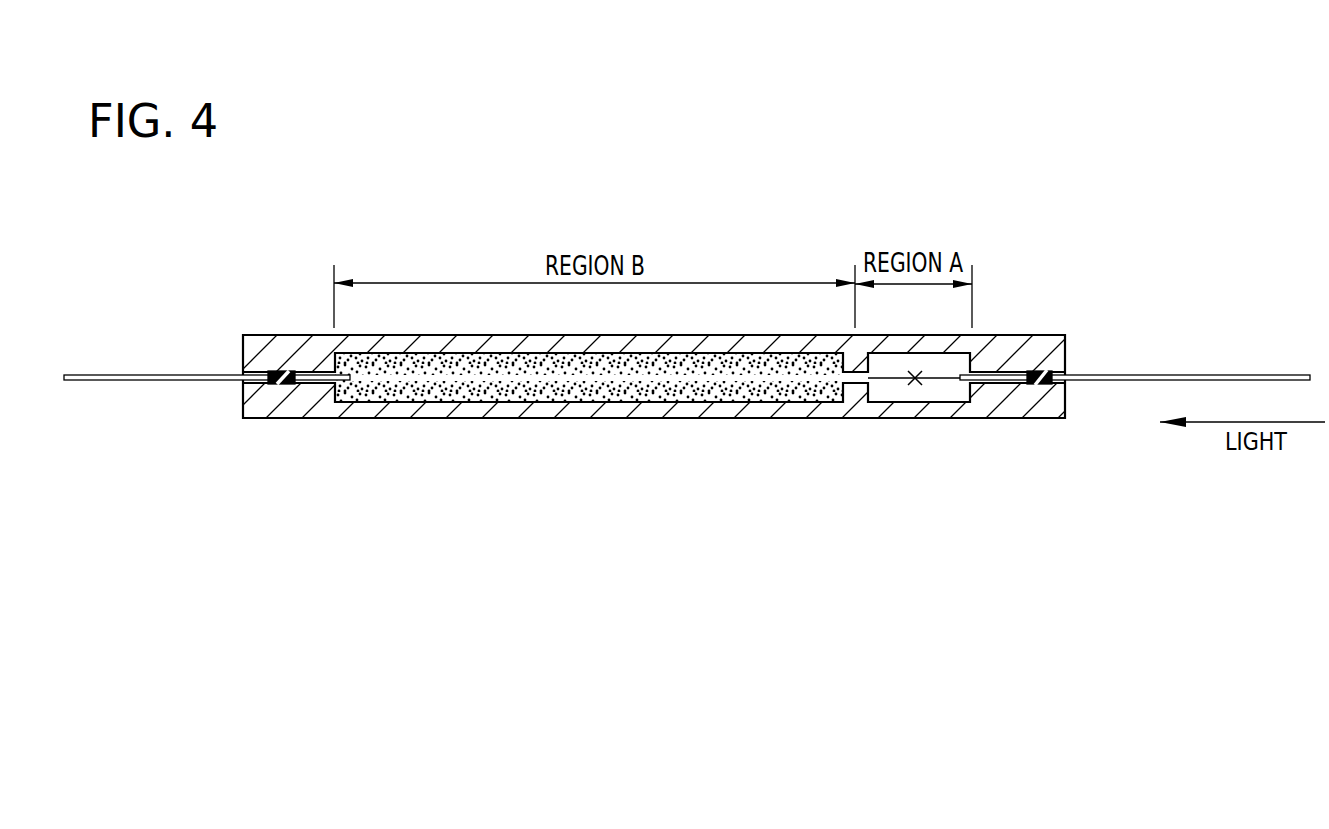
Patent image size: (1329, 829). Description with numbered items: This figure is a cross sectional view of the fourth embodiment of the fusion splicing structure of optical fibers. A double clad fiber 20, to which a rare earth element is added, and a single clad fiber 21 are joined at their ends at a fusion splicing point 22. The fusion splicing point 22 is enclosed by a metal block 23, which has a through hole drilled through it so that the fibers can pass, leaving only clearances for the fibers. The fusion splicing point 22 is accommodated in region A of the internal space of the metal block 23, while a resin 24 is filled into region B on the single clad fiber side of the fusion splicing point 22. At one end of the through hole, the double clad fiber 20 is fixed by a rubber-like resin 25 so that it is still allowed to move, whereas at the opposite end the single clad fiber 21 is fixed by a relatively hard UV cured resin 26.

The double clad fiber 20 is at (1243, 375).
The single clad fiber 21 is at (120, 374).
The fusion splicing point 22 is at (915, 384).
The metal block 23 is at (1030, 342).
The resin 24 is at (455, 392).
The rubber-like resin 25 is at (1040, 386).
The UV cured resin 26 is at (280, 372).